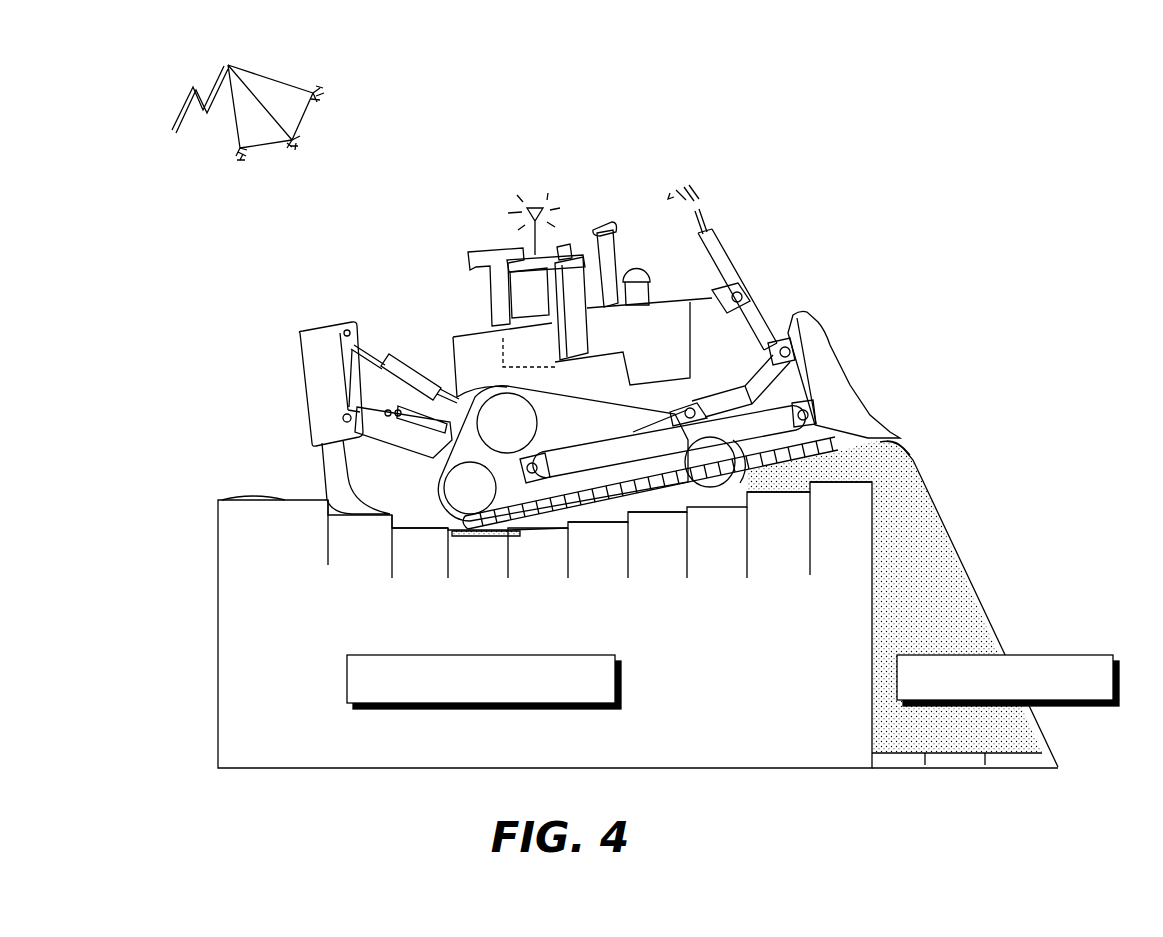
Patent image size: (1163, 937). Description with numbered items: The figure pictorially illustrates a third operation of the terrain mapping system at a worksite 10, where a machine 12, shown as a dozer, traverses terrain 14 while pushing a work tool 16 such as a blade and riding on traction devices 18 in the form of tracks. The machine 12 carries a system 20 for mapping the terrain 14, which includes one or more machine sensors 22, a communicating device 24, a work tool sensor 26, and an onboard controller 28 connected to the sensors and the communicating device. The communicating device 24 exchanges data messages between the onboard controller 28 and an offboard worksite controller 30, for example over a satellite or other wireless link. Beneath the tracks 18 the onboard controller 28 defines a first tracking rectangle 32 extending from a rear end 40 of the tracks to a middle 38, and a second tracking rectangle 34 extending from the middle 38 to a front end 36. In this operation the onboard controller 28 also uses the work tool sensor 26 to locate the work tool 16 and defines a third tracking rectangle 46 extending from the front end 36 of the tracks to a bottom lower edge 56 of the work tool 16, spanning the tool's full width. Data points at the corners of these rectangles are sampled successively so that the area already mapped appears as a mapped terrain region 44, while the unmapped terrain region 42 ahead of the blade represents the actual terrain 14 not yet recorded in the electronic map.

The worksite 10 is at (997, 195).
The machine 12 is at (682, 186).
The terrain 14 is at (983, 572).
The work tool 16 is at (843, 370).
The traction device 18 is at (433, 487).
The system 20 is at (594, 141).
The machine sensor 22 is at (572, 240).
The communicating device 24 is at (533, 207).
The work tool sensor 26 is at (708, 212).
The onboard controller 28 is at (519, 359).
The offboard worksite controller 30 is at (226, 64).
The first tracking rectangle 32 is at (530, 533).
The second tracking rectangle 34 is at (673, 514).
The front end of track 36 is at (753, 494).
The middle of track 38 is at (598, 520).
The rear end of track 40 is at (448, 532).
The unmapped terrain region 42 is at (926, 620).
The mapped terrain region 44 is at (444, 634).
The third tracking rectangle 46 is at (795, 494).
The bottom lower edge of work tool 56 is at (897, 444).